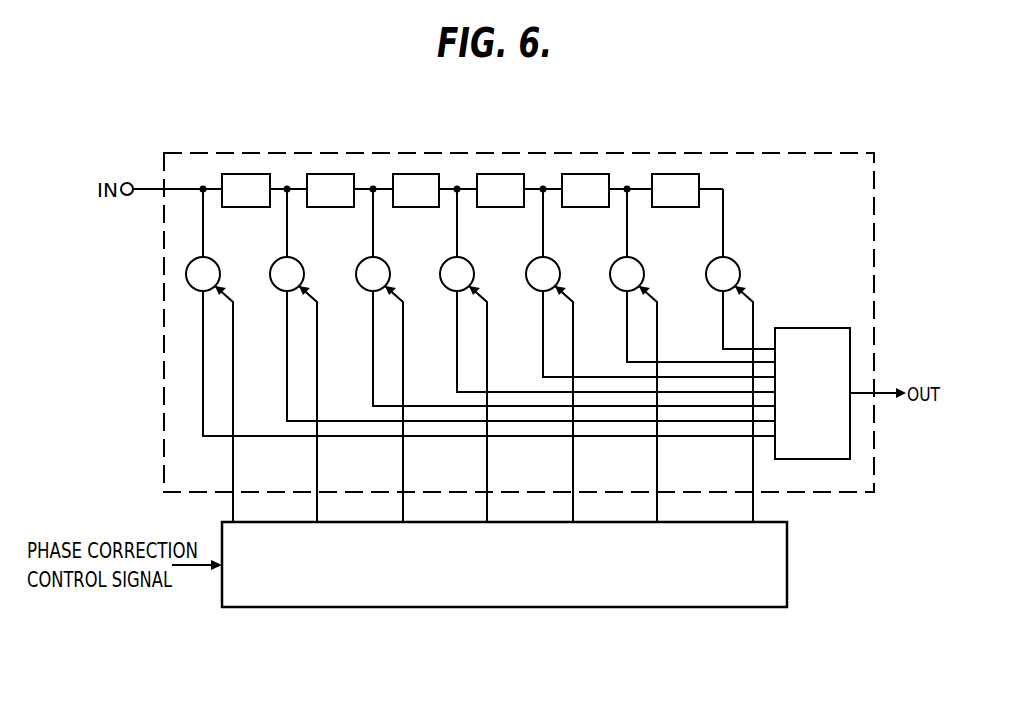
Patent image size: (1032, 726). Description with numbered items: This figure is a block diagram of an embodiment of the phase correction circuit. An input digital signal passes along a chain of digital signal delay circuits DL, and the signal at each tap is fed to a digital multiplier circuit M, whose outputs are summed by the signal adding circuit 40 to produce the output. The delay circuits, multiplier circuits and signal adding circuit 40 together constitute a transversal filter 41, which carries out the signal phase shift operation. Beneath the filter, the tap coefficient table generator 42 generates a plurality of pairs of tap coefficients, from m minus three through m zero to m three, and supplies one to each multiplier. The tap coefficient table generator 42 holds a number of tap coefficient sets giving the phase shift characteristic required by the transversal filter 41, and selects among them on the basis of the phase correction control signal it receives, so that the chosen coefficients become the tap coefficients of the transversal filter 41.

The signal adding circuit 40 is at (814, 343).
The transversal filter 41 is at (464, 162).
The tap coefficient table generator 42 is at (726, 597).